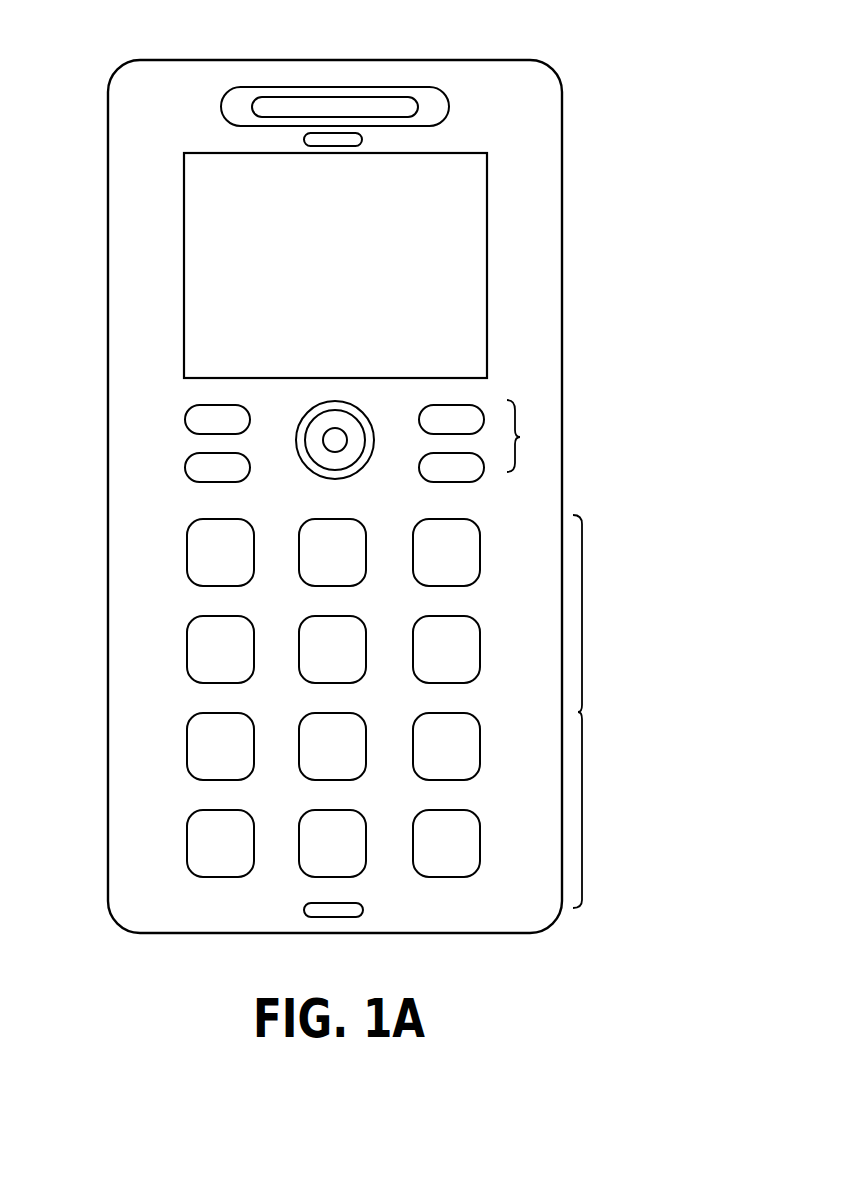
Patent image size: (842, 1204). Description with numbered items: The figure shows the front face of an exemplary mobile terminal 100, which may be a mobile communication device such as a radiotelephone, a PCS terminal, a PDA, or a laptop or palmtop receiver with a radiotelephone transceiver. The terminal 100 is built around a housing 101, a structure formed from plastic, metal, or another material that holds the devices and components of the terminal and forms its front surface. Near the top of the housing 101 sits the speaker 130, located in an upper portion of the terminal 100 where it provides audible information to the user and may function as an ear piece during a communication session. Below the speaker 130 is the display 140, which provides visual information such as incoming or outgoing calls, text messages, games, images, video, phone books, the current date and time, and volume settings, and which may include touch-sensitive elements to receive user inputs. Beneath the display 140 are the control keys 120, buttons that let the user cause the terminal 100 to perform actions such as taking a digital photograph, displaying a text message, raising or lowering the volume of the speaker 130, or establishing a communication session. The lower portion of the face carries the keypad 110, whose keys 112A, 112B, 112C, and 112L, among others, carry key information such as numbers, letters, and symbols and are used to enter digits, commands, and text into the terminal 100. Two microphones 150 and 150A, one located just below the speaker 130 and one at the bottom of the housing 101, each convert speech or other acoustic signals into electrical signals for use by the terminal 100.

The mobile terminal 100 is at (357, 469).
The housing 101 is at (304, 496).
The keypad 110 is at (427, 691).
The key 112A is at (251, 530).
The key 112B is at (354, 530).
The key 112C is at (471, 530).
The key 112L is at (480, 825).
The control keys 120 is at (400, 441).
The speaker 130 is at (375, 99).
The display 140 is at (335, 265).
The microphone 150 is at (291, 913).
The microphone 150A is at (322, 163).